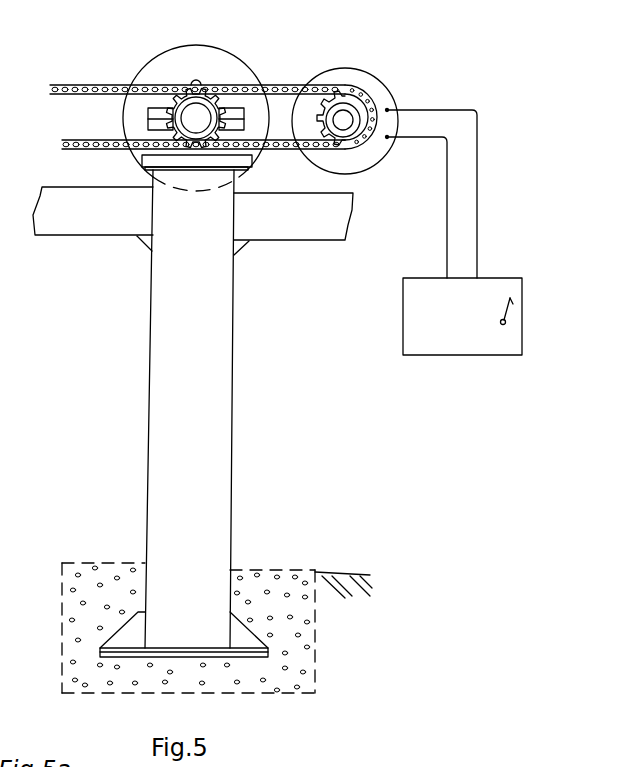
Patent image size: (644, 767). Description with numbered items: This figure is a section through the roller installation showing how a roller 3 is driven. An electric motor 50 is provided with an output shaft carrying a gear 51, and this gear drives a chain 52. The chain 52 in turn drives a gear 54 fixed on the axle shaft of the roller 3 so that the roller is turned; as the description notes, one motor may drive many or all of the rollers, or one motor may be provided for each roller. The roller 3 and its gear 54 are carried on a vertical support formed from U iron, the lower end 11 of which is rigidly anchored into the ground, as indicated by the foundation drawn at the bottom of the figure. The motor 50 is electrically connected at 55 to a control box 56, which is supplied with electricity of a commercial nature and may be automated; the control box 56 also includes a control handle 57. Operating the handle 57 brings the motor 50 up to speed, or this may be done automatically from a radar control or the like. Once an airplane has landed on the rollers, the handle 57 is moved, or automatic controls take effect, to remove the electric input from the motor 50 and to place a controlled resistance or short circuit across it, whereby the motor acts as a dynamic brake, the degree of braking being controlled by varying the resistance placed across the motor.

The roller 3 is at (148, 70).
The lower end of vertical support 11 is at (163, 560).
The electric motor 50 is at (362, 78).
The gear 51 is at (360, 110).
The chain 52 is at (276, 152).
The gear 54 is at (220, 100).
The electrical connection 55 is at (450, 172).
The control box 56 is at (505, 340).
The control handle 57 is at (515, 305).